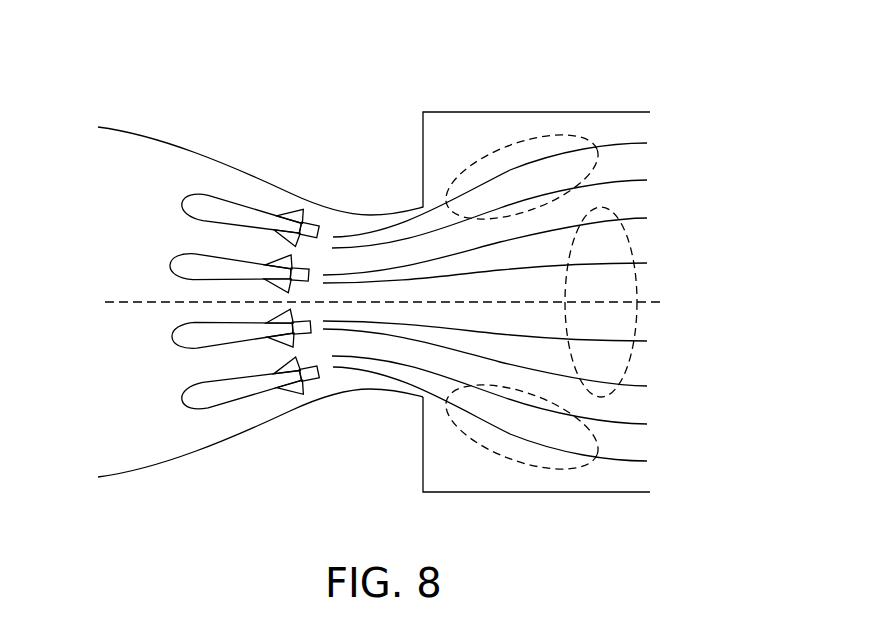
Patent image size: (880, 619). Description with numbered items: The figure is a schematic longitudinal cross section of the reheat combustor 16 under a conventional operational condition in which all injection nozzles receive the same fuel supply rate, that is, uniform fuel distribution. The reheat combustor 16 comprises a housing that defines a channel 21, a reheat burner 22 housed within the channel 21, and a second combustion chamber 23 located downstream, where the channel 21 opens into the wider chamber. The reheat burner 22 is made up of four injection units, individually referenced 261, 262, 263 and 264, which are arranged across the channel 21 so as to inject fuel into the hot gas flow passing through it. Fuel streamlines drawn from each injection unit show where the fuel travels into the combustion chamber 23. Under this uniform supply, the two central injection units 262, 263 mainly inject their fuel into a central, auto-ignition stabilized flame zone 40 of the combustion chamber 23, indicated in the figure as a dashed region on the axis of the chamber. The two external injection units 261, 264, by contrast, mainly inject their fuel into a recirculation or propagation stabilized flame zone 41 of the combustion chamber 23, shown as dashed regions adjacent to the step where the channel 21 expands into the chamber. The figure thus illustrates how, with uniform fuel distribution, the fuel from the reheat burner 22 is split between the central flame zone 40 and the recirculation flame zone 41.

The reheat combustor 16 is at (377, 138).
The channel 21 is at (248, 428).
The reheat burner 22 is at (229, 190).
The second combustion chamber 23 is at (467, 490).
The central auto-ignition stabilized flame zone 40 is at (638, 291).
The recirculation or propagation stabilized flame zone 41 is at (509, 137).
The injection unit 261 is at (192, 399).
The injection unit 262 is at (182, 337).
The injection unit 263 is at (180, 266).
The injection unit 264 is at (192, 205).